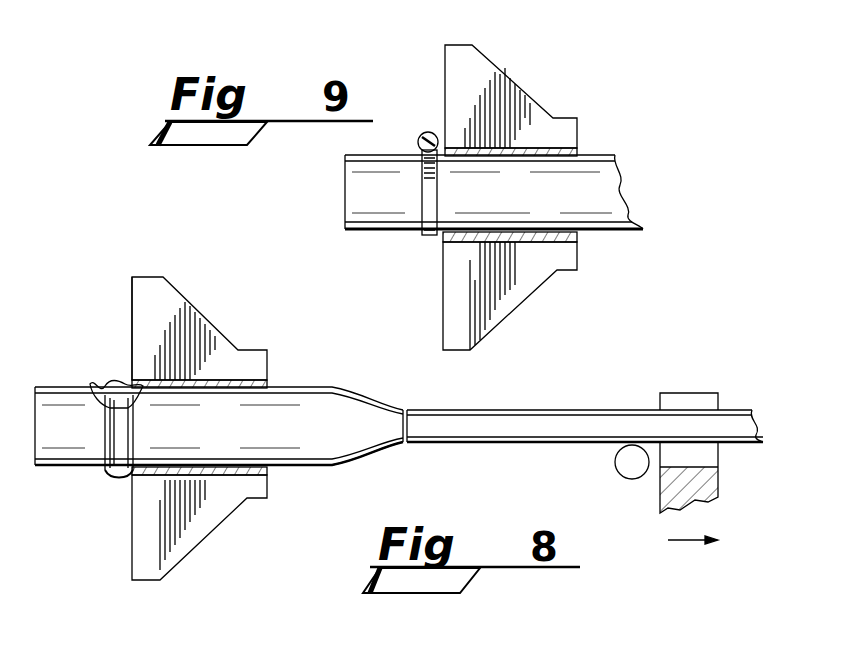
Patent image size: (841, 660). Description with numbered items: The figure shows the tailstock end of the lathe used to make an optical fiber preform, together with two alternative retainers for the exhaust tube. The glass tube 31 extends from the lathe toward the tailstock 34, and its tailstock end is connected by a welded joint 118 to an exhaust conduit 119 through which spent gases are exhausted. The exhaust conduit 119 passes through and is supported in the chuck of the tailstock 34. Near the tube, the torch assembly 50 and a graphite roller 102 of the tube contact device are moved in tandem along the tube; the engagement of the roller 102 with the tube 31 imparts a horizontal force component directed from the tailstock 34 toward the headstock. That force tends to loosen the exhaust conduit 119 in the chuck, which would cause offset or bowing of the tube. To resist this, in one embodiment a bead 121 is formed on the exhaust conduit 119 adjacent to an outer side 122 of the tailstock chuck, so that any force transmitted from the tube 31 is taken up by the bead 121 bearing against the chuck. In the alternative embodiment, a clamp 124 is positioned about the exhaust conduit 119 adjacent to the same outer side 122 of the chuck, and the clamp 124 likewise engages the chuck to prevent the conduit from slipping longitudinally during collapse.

In FIG. 9, the tailstock 34 is at (520, 95).
In FIG. 8, the tailstock 34 is at (172, 302).
In FIG. 9, the exhaust conduit 119 is at (594, 166).
In FIG. 8, the exhaust conduit 119 is at (308, 400).
In FIG. 9, the clamp 124 is at (428, 131).
In FIG. 8, the outer side 122 is at (131, 302).
In FIG. 8, the bead 121 is at (119, 381).
In FIG. 8, the welded joint 118 is at (396, 425).
In FIG. 8, the glass tube 31 is at (526, 433).
In FIG. 8, the torch assembly 50 is at (720, 483).
In FIG. 8, the roller 102 is at (617, 470).